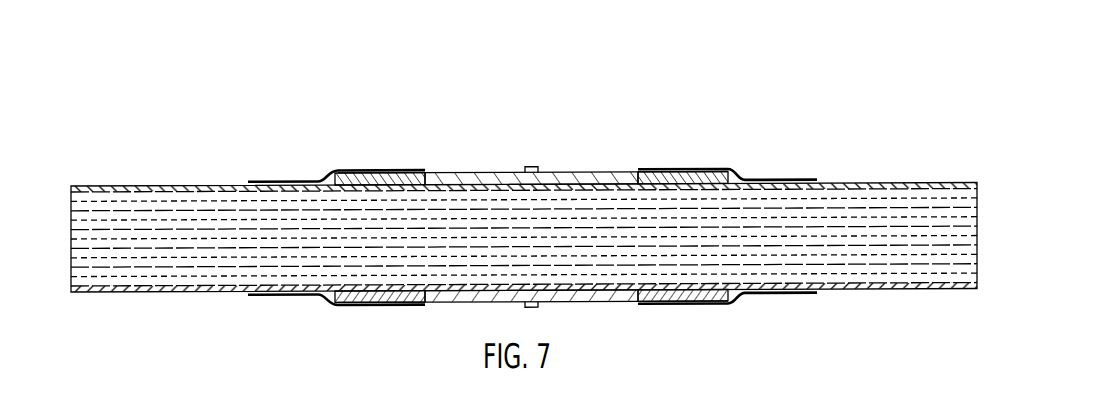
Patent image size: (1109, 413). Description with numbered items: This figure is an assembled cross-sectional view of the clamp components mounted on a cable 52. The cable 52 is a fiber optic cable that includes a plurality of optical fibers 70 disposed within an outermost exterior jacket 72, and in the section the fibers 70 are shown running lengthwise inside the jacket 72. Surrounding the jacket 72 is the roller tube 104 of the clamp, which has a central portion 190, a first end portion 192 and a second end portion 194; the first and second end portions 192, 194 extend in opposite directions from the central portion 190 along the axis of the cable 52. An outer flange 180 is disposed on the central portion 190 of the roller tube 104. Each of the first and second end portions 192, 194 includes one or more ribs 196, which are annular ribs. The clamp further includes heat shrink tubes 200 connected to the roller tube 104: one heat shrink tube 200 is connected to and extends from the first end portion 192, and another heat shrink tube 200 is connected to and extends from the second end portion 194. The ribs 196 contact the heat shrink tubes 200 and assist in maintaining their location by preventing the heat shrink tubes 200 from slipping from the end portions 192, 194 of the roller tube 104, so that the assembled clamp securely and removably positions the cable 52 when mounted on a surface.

The cable 52 is at (92, 125).
The optical fibers 70 is at (138, 202).
The outermost exterior jacket 72 is at (199, 186).
The roller tube 104 is at (532, 193).
The outer flange 180 is at (530, 169).
The central portion 190 is at (610, 173).
The first end portion 192 is at (392, 182).
The second end portion 194 is at (675, 179).
The ribs 196 is at (370, 172).
The heat shrink tube 200 is at (328, 180).